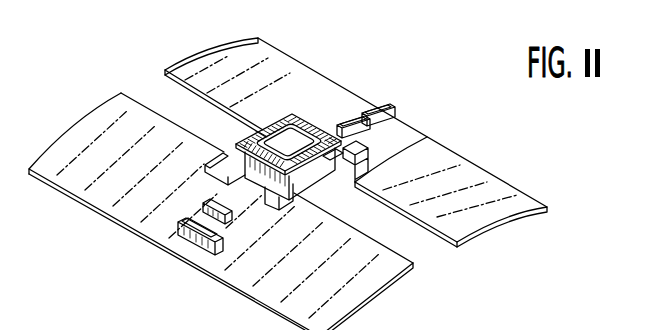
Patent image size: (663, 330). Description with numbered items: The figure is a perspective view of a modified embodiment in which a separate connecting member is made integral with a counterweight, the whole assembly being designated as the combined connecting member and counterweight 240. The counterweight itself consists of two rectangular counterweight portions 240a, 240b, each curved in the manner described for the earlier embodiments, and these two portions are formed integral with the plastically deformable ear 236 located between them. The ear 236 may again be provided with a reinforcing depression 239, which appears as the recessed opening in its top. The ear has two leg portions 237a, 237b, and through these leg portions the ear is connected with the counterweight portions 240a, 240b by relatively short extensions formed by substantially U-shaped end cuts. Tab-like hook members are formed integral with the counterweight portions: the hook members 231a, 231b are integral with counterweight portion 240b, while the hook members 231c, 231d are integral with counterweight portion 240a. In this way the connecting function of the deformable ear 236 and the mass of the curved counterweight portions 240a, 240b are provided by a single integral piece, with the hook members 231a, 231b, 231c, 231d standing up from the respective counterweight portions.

The combined connecting member and counterweight 240 is at (317, 63).
The counterweight portion 240a is at (220, 53).
The counterweight portion 240b is at (388, 272).
The plastically deformable ear 236 is at (274, 120).
The reinforcing depression 239 is at (302, 134).
The leg portion 237a is at (223, 152).
The leg portion 237b is at (326, 120).
The tab-like hook member 231a is at (176, 232).
The tab-like hook member 231b is at (229, 226).
The tab-like hook member 231c is at (388, 112).
The tab-like hook member 231d is at (368, 143).